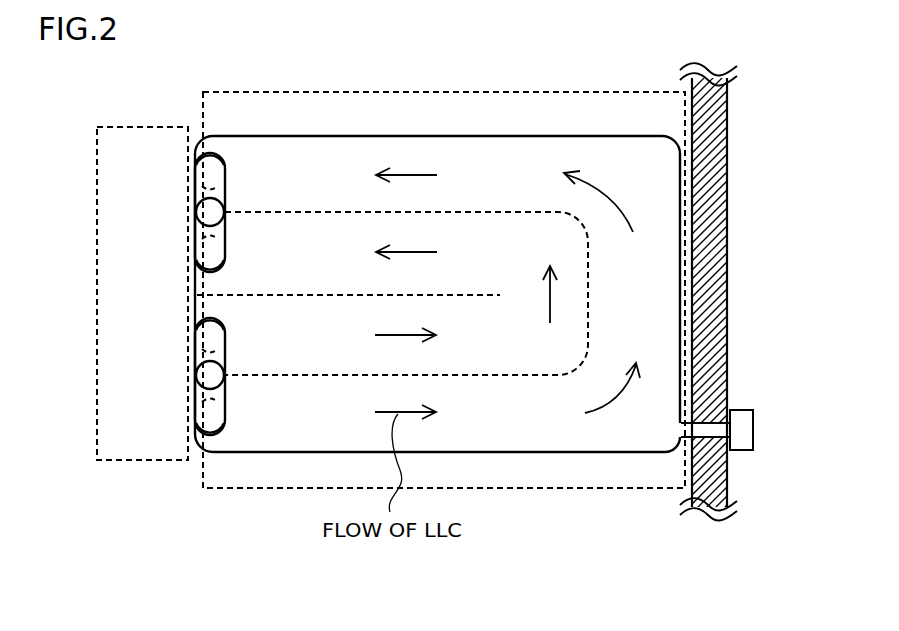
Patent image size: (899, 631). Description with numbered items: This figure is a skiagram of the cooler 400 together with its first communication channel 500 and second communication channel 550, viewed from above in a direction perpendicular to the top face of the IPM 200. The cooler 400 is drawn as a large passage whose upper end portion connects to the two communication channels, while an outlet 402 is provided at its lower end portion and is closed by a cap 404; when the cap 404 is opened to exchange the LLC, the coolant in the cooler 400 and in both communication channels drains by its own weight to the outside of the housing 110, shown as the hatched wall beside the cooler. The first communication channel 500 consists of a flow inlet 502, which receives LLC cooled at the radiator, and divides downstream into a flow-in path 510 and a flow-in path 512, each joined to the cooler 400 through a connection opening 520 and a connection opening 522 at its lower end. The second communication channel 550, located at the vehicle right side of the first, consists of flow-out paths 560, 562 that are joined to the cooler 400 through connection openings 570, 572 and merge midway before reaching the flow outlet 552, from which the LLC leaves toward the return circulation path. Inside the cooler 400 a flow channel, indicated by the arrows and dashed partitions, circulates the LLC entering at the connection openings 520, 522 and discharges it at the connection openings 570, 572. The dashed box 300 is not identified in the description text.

The housing 110 is at (727, 137).
The IPM 200 is at (595, 488).
The heat exchanger 300 is at (138, 462).
The cooler 400 is at (535, 136).
The outlet 402 is at (707, 422).
The cap 404 is at (755, 427).
The first communication channel 500 is at (184, 393).
The flow inlet 502 is at (201, 375).
The flow-in path 510 is at (225, 423).
The flow-in path 512 is at (223, 320).
The connection opening 520 is at (213, 412).
The connection opening 522 is at (213, 337).
The second communication channel 550 is at (184, 231).
The flow outlet 552 is at (201, 212).
The flow-out path 560 is at (225, 268).
The flow-out path 562 is at (225, 156).
The connection opening 570 is at (212, 255).
The connection opening 572 is at (212, 175).